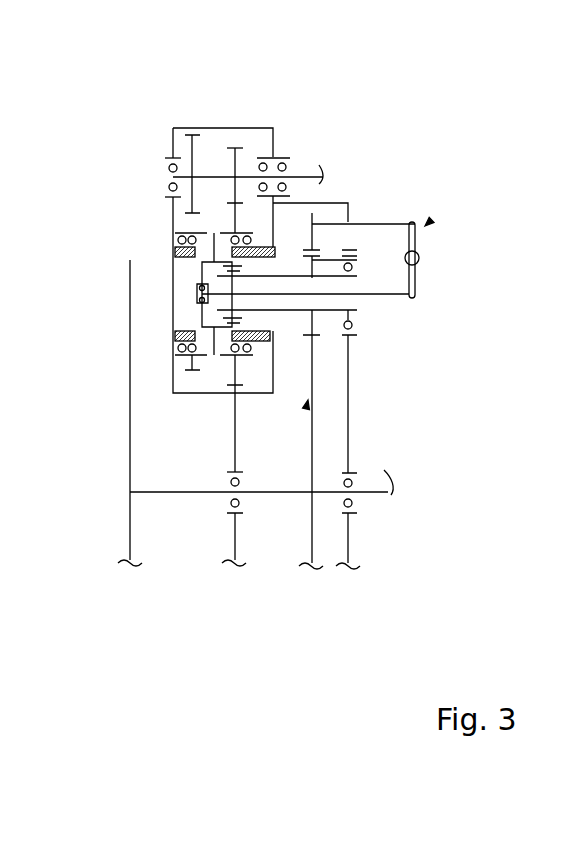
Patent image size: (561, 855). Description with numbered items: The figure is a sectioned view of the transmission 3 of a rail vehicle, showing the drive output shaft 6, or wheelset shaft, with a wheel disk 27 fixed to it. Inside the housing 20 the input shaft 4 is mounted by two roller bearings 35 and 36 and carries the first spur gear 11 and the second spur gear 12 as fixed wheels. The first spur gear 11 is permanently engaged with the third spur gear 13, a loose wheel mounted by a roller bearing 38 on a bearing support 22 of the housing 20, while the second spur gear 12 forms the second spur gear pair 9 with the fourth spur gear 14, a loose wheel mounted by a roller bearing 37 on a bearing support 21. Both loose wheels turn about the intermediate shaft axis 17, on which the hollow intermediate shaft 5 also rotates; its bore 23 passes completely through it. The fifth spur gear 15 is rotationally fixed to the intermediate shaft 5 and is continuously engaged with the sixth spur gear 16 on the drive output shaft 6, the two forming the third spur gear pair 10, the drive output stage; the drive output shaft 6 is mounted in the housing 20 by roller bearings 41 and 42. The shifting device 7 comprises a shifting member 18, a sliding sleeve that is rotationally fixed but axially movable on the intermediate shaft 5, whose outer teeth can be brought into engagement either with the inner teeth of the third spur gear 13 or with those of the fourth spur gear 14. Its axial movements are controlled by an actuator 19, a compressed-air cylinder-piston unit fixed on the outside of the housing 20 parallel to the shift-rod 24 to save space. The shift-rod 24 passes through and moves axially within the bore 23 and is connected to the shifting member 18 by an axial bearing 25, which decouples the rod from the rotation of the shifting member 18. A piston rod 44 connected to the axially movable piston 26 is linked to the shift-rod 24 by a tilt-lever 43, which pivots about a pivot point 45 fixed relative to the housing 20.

The transmission 3 is at (183, 117).
The input shaft 4 is at (306, 196).
The intermediate shaft 5 is at (350, 352).
The drive output shaft 6 is at (389, 476).
The shifting device 7 is at (427, 224).
The second spur gear pair 9 is at (172, 193).
The third spur gear pair 10 is at (307, 404).
The first spur gear 11 is at (236, 157).
The second spur gear 12 is at (175, 152).
The third spur gear 13 is at (233, 219).
The fourth spur gear 14 is at (177, 218).
The fifth spur gear 15 is at (360, 256).
The sixth spur gear 16 is at (314, 440).
The intermediate shaft axis 17 is at (197, 293).
The shifting member 18 is at (183, 265).
The actuator 19 is at (345, 202).
The housing 20 is at (235, 430).
The bearing support 21 is at (176, 317).
The bearing support 22 is at (350, 397).
The bore 23 is at (360, 305).
The shift-rod 24 is at (393, 298).
The axial bearing 25 is at (176, 303).
The piston 26 is at (373, 215).
The wheel disk 27 is at (130, 433).
The roller bearing 35 is at (285, 167).
The roller bearing 36 is at (172, 166).
The roller bearing 37 is at (176, 338).
The roller bearing 38 is at (252, 352).
The roller bearing 41 is at (378, 497).
The roller bearing 42 is at (232, 484).
The tilt-lever 43 is at (417, 280).
The piston rod 44 is at (314, 217).
The pivot point 45 is at (420, 251).